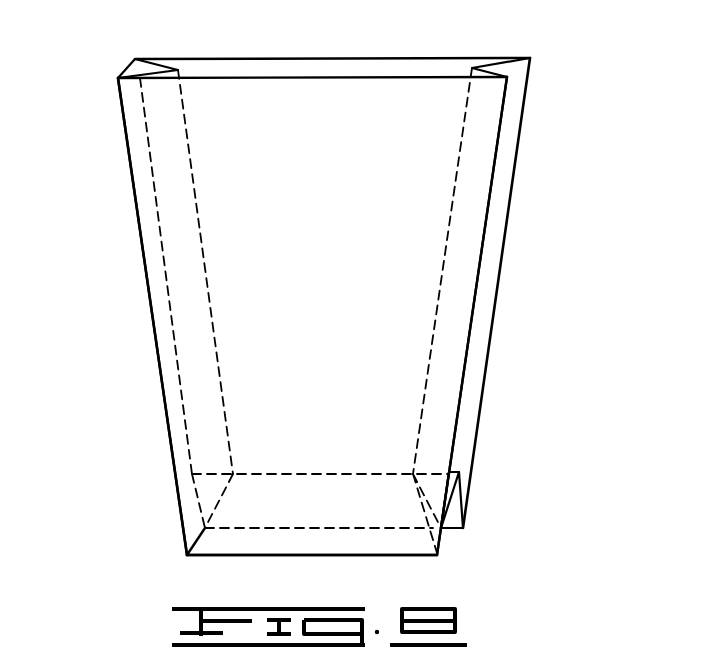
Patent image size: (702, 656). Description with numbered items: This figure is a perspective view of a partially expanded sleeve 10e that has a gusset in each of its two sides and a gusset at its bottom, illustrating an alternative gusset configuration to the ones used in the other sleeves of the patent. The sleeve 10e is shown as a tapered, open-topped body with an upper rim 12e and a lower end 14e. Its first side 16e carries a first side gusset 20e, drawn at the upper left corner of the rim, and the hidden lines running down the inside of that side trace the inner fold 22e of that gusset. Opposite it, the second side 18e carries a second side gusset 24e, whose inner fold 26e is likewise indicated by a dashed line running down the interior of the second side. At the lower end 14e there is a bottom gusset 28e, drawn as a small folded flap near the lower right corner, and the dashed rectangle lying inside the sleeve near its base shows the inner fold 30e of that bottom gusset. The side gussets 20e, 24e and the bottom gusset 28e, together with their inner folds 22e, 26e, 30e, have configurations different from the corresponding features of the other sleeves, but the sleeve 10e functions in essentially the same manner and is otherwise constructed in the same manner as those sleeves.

The sleeve 10e is at (330, 304).
The top rim 12e is at (272, 58).
The lower end 14e is at (237, 557).
The first side 16e is at (150, 296).
The second side 18e is at (507, 228).
The first side gusset 20e is at (135, 63).
The inner fold 22e is at (188, 174).
The second side gusset 24e is at (515, 108).
The inner fold 26e is at (455, 183).
The bottom gusset 28e is at (464, 495).
The inner fold 30e is at (373, 472).